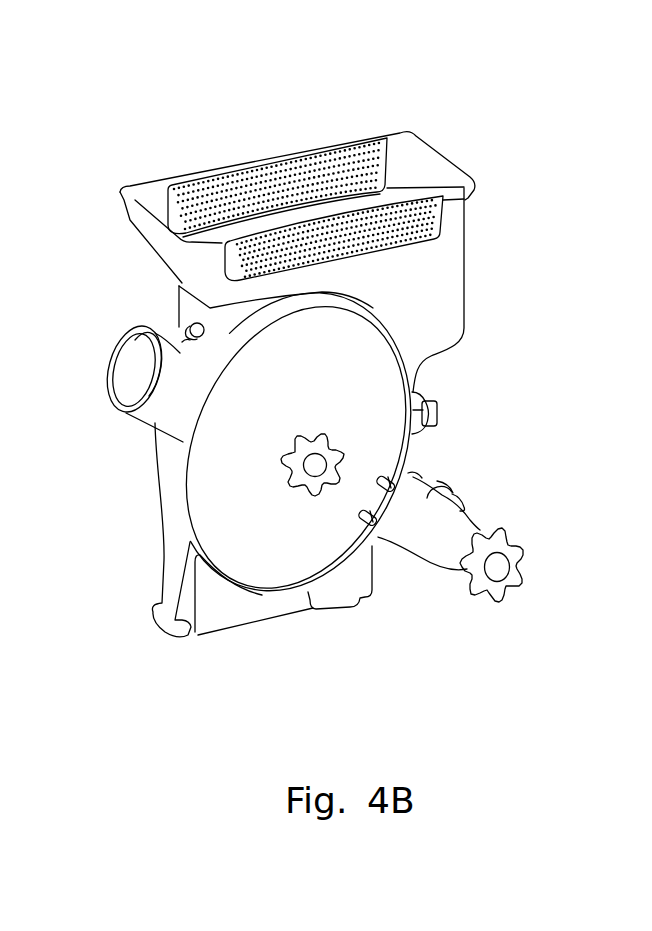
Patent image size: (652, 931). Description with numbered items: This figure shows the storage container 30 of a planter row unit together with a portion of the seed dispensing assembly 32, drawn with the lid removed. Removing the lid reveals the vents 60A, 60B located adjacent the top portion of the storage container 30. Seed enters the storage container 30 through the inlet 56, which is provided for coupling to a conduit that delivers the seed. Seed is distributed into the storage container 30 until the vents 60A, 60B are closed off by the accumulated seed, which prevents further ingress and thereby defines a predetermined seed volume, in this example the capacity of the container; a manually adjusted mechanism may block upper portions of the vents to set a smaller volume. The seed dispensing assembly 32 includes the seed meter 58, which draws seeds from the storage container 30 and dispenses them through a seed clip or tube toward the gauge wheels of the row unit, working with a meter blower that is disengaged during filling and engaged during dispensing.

The storage container 30 is at (447, 305).
The seed dispensing assembly 32 is at (490, 448).
The inlet 56 is at (130, 358).
The seed meter 58 is at (212, 488).
The vent 60A is at (468, 200).
The vent 60B is at (328, 160).